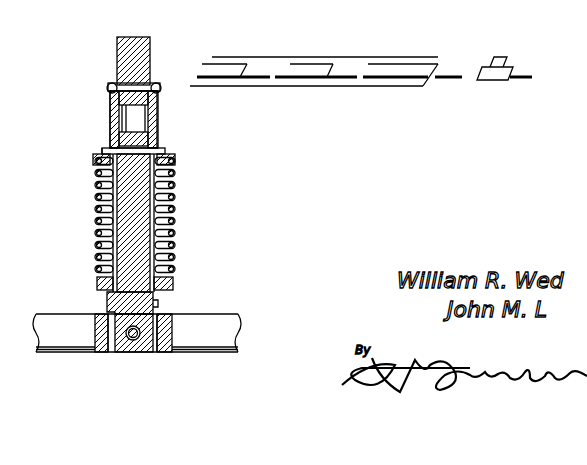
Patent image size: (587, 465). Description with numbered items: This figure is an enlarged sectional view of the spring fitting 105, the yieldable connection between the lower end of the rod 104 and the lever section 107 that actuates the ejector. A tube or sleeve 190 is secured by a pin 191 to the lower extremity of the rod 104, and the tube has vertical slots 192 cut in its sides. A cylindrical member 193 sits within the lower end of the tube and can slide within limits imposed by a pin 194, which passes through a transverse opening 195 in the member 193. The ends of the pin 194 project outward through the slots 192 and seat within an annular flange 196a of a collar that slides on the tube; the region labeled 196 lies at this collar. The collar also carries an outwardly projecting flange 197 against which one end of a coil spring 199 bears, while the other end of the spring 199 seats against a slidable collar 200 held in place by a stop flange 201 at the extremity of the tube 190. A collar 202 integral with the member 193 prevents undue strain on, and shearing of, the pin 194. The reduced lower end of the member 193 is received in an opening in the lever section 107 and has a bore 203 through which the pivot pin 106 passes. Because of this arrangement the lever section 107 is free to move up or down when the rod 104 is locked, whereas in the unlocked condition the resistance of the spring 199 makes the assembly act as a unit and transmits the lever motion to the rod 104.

The rod 104 is at (147, 52).
The pin 191 is at (133, 87).
The tube or sleeve 190 is at (115, 112).
The transverse opening 195 is at (123, 139).
The annular flange 196a is at (103, 146).
The pin 194 is at (157, 147).
The flange washer 196 is at (168, 150).
The outwardly projecting flange 197 is at (96, 160).
The vertical slots 192 is at (170, 177).
The spring fitting 105 is at (163, 222).
The cylindrical member 193 is at (170, 232).
The coil spring 199 is at (97, 213).
The slidable collar 200 is at (95, 285).
The stop flange 201 is at (105, 295).
The collar 202 is at (163, 300).
The lever section 107 is at (217, 320).
The pivot pin 106 is at (115, 352).
The bore 203 is at (132, 342).